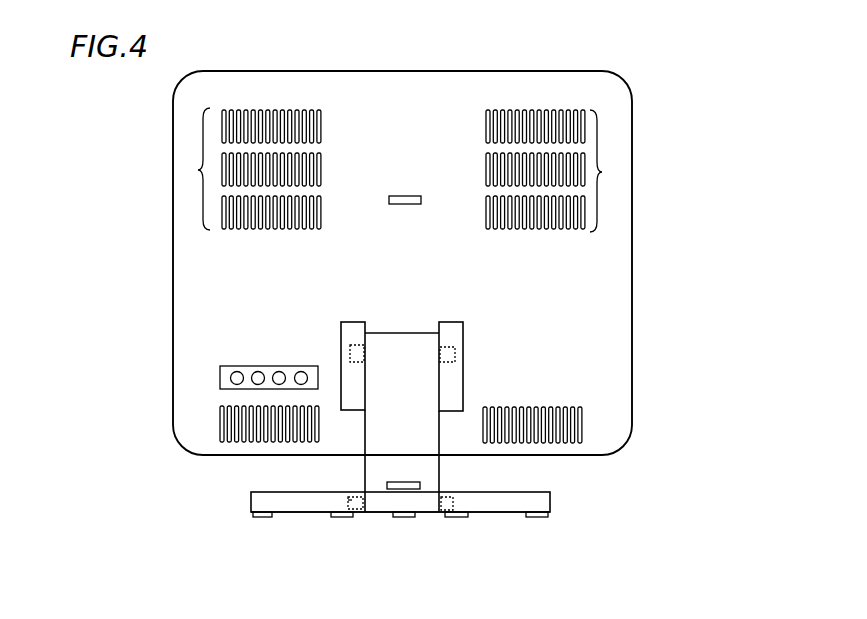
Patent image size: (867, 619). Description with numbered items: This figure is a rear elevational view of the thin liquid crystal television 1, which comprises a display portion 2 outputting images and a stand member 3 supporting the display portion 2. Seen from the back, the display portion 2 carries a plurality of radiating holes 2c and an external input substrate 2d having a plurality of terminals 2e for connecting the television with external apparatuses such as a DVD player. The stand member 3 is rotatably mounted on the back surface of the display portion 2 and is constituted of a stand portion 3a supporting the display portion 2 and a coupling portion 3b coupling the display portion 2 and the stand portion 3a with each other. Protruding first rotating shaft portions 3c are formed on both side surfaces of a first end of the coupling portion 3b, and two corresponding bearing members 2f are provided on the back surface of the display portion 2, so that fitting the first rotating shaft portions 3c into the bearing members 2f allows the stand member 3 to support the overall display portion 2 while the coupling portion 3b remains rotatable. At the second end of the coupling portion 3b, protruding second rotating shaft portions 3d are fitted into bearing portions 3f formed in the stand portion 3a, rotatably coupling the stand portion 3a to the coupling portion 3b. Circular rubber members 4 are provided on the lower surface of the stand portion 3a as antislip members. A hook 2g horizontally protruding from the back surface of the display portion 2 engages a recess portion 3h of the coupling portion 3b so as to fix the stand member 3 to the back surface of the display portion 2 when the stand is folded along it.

The thin liquid crystal television 1 is at (702, 80).
The display portion 2 is at (605, 456).
The radiating holes 2c is at (196, 166).
The external input substrate 2d is at (220, 387).
The terminals 2e is at (280, 371).
The bearing members 2f is at (352, 411).
The hook 2g is at (407, 196).
The stand member 3 is at (384, 396).
The stand portion 3a is at (550, 500).
The coupling portion 3b is at (440, 478).
The first rotating shaft portions 3c is at (352, 345).
The second rotating shaft portions 3d is at (348, 500).
The bearing portions 3f is at (360, 509).
The recess portion 3h is at (421, 489).
The rubber members 4 is at (257, 517).